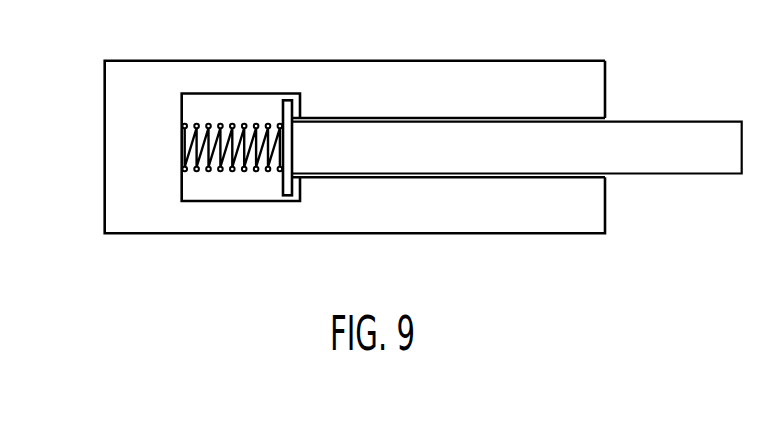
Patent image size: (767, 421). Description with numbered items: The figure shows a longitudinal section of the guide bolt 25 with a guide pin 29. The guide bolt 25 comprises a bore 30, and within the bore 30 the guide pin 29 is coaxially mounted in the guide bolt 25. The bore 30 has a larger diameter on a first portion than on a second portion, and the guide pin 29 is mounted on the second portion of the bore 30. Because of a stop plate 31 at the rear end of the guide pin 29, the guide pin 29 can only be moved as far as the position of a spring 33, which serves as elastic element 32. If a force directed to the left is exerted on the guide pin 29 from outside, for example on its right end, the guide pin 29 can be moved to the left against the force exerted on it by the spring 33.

The guide bolt 25 is at (492, 83).
The guide pin 29 is at (368, 140).
The bore 30 is at (243, 202).
The stop plate 31 is at (285, 110).
The elastic element 32 is at (223, 90).
The spring 33 is at (208, 122).